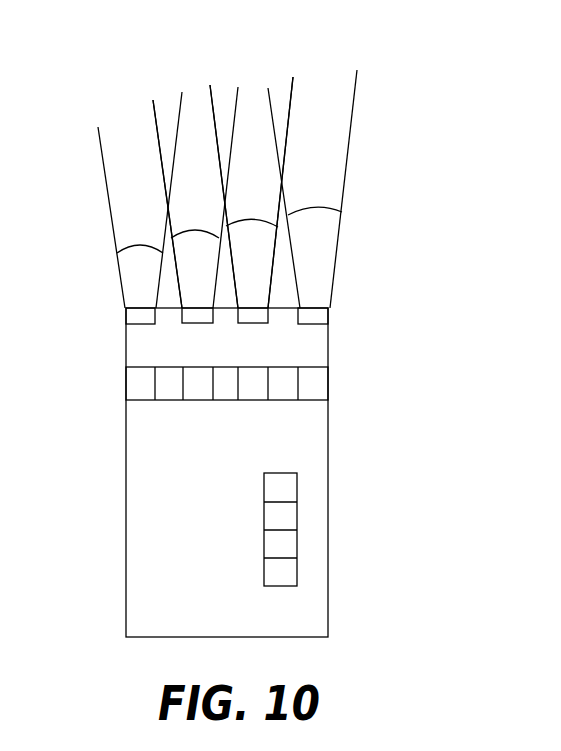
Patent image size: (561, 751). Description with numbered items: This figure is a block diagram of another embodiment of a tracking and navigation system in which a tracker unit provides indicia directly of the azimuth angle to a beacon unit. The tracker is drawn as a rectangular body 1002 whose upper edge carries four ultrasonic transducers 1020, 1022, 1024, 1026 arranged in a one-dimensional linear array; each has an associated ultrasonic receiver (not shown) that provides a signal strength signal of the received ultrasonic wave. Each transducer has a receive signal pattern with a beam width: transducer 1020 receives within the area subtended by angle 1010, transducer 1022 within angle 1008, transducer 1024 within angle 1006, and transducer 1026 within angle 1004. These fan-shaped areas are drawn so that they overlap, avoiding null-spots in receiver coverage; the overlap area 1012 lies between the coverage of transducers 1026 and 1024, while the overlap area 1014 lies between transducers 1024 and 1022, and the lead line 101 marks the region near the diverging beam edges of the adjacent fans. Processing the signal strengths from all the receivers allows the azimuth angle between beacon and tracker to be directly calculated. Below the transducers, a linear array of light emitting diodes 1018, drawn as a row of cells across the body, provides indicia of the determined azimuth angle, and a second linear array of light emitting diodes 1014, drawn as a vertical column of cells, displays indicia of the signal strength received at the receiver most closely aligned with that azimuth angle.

The light beam 101 is at (167, 108).
The sensor body 1002 is at (237, 541).
The angle 1004 is at (312, 189).
The angle 1006 is at (251, 192).
The angle 1008 is at (195, 197).
The angle 1010 is at (140, 200).
The overlap area 1012 is at (279, 90).
The second linear array of light emitting diodes 1014 is at (298, 523).
The linear array of light emitting diodes 1018 is at (430, 400).
The ultrasonic transducer 1020 is at (130, 318).
The ultrasonic transducer 1022 is at (192, 323).
The ultrasonic transducer 1024 is at (258, 323).
The ultrasonic transducer 1026 is at (318, 317).